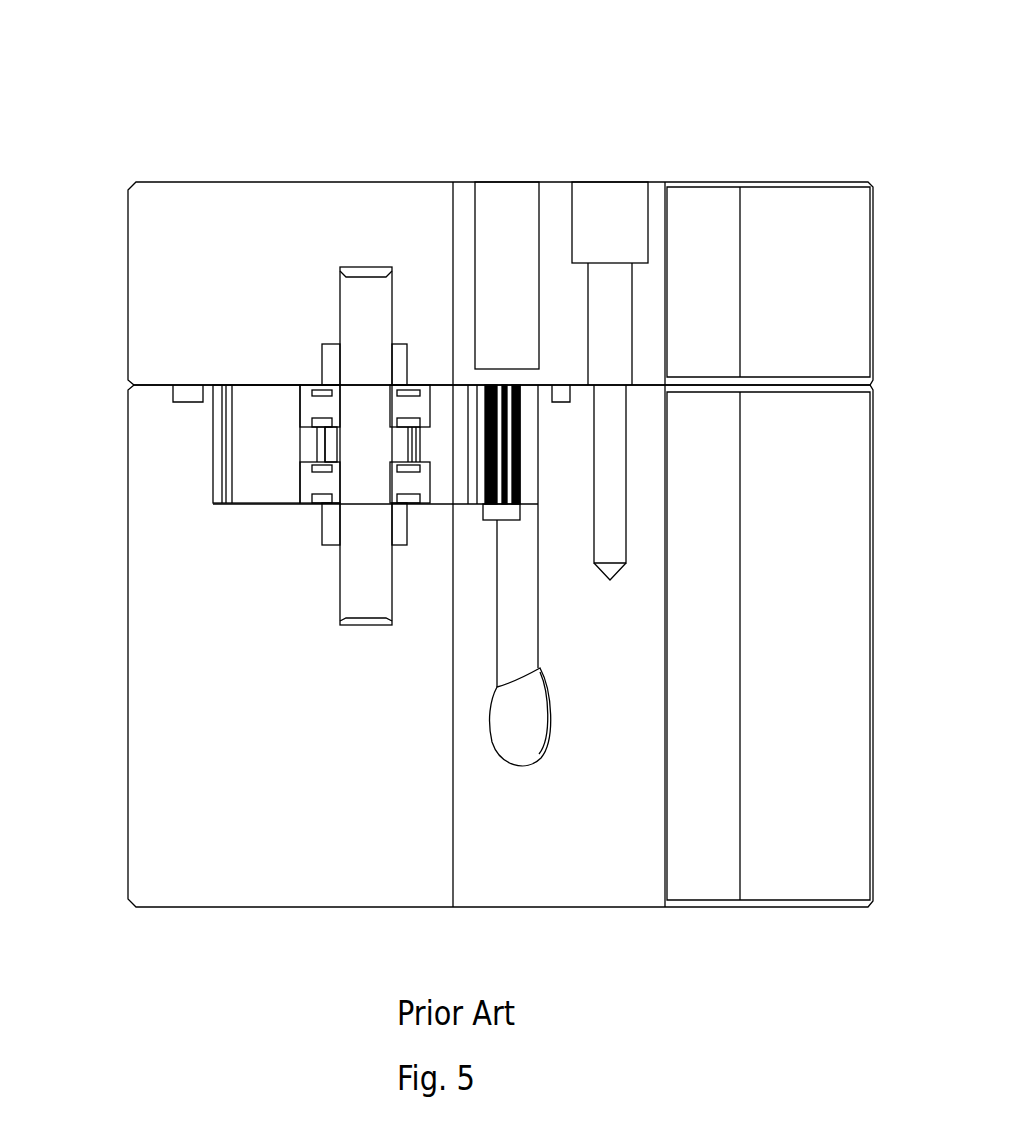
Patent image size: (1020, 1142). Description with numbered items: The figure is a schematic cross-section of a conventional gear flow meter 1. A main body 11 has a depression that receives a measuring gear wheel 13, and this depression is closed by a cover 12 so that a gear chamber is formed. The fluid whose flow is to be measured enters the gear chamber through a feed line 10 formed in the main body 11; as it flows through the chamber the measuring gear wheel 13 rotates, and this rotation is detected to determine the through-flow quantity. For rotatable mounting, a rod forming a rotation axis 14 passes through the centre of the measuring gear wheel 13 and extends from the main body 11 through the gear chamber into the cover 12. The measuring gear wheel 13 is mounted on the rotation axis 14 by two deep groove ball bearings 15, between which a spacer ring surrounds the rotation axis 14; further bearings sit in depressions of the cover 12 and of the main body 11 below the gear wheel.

The gear flow meter 1 is at (633, 92).
The feed line 10 is at (533, 616).
The main body 11 is at (115, 577).
The cover 12 is at (113, 290).
The measuring gear wheel 13 is at (271, 458).
The rotation axis 14 is at (378, 591).
The deep groove ball bearings 15 is at (306, 403).